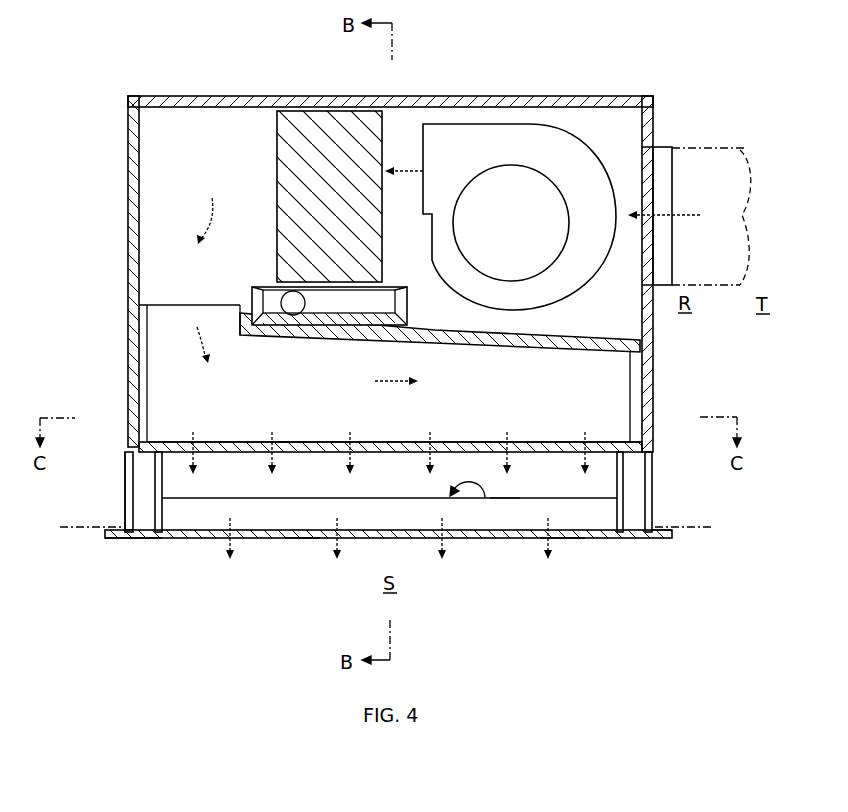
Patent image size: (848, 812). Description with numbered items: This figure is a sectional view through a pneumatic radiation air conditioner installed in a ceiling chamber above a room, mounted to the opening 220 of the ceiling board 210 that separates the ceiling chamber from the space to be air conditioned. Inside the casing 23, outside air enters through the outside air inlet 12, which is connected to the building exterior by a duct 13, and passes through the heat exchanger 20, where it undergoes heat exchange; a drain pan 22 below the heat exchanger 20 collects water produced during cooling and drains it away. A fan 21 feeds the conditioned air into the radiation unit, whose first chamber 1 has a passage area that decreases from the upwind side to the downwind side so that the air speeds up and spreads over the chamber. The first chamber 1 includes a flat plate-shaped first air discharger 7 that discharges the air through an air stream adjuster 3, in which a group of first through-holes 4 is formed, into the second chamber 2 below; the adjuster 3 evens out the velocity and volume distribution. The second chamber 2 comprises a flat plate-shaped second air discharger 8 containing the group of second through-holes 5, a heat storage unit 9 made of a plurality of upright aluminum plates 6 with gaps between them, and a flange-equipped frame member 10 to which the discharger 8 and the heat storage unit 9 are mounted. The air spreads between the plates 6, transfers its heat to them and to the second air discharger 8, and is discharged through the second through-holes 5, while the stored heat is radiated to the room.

The first chamber 1 is at (630, 336).
The second chamber 2 is at (266, 542).
The air stream adjuster 3 is at (496, 438).
The first through-holes 4 is at (270, 440).
The second through-holes 5 is at (308, 540).
The plates 6 is at (503, 518).
The first air discharger 7 is at (295, 440).
The second air discharger 8 is at (297, 540).
The heat storage unit 9 is at (485, 500).
The flange-equipped frame member 10 is at (147, 540).
The outside air inlet 12 is at (673, 167).
The duct 13 is at (735, 140).
The heat exchanger 20 is at (277, 140).
The fan 21 is at (467, 124).
The drain pan 22 is at (270, 287).
The casing 23 is at (128, 250).
The ceiling board 210 is at (700, 540).
The opening 220 is at (660, 521).